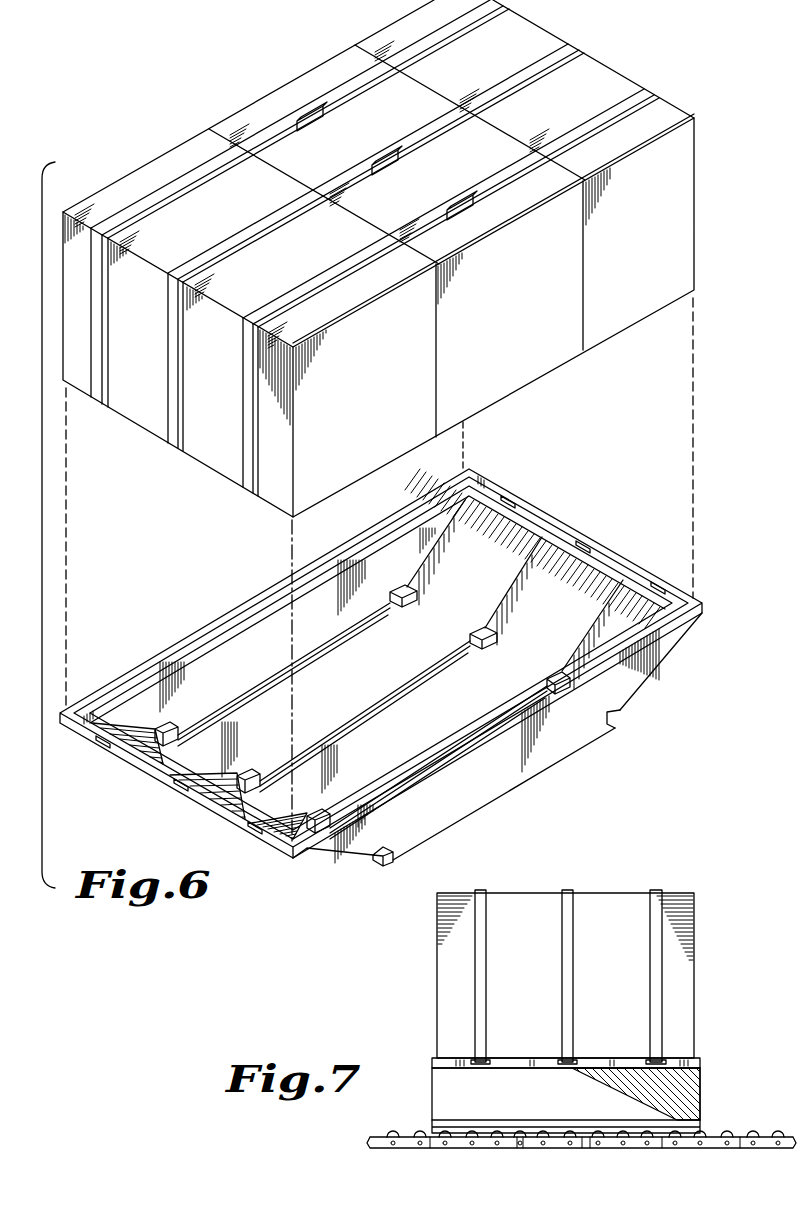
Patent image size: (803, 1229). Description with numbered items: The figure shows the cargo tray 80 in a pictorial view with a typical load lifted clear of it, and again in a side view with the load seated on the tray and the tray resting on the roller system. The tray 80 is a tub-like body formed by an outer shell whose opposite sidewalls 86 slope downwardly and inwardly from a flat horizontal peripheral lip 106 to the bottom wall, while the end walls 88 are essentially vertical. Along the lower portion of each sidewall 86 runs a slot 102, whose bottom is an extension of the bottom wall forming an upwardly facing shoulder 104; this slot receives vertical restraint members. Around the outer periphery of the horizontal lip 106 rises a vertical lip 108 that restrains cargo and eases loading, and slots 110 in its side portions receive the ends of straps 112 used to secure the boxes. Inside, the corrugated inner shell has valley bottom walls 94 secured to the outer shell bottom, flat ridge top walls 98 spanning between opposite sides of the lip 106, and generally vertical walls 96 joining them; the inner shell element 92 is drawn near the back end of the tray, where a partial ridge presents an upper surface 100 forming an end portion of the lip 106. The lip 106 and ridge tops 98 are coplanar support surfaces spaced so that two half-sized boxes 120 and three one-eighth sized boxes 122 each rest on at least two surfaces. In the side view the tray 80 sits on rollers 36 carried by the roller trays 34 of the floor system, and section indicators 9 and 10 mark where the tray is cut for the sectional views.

In FIG. 6, the section line 9- 9 is at (288, 567).
In FIG. 6, the section line 10- 10 is at (260, 757).
In FIG. 7, the roller tray 34 is at (484, 1152).
In FIG. 7, the roller 36 is at (394, 1136).
In FIG. 6, the cargo tray 80 is at (336, 864).
In FIG. 7, the cargo tray 80 is at (702, 1086).
In FIG. 6, the sidewall 86 is at (648, 676).
In FIG. 7, the sidewall 86 is at (542, 1112).
In FIG. 6, the end wall 88 is at (468, 795).
In FIG. 6, the sloped end plate 92 is at (477, 562).
In FIG. 6, the valley bottom wall 94 is at (213, 705).
In FIG. 6, the generally vertical wall 96 is at (425, 662).
In FIG. 6, the ridge top wall 98 is at (440, 682).
In FIG. 6, the partial ridge upper surface 100 is at (133, 690).
In FIG. 6, the slot 102 is at (617, 713).
In FIG. 7, the slot 102 is at (680, 1124).
In FIG. 6, the shoulder 104 is at (390, 854).
In FIG. 6, the horizontal lip 106 is at (603, 557).
In FIG. 6, the vertical lip 108 is at (559, 521).
In FIG. 7, the vertical lip 108 is at (703, 1060).
In FIG. 6, the slot 110 is at (512, 500).
In FIG. 6, the strap 112 is at (578, 51).
In FIG. 7, the strap 112 is at (656, 890).
In FIG. 6, the half-sized box 120 is at (448, 201).
In FIG. 7, the half-sized box 120 is at (633, 944).
In FIG. 6, the one-eighth sized box 122 is at (472, 77).